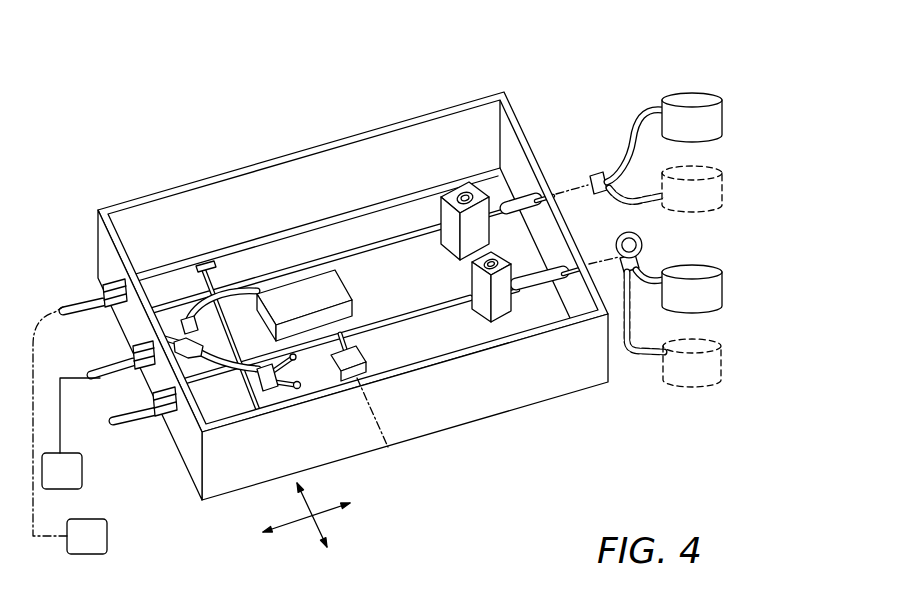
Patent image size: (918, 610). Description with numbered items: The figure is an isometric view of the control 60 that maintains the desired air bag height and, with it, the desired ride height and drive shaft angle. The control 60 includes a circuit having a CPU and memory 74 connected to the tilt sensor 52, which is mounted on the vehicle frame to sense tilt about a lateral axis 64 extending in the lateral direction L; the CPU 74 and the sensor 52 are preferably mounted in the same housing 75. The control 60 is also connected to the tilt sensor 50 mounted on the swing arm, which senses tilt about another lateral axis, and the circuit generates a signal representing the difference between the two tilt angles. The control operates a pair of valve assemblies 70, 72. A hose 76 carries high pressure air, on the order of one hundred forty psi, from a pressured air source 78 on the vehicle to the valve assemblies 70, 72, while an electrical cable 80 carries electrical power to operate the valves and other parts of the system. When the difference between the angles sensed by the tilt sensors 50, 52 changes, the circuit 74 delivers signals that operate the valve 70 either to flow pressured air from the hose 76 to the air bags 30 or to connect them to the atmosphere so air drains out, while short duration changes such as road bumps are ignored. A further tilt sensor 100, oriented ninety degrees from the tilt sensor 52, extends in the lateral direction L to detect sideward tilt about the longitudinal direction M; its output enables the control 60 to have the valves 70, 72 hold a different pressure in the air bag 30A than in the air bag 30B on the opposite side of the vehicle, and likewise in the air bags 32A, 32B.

The air bag 30 is at (698, 217).
The air bag 30A is at (722, 116).
The air bag 32A is at (722, 190).
The air bag 30B is at (722, 290).
The air bag 32B is at (722, 364).
The tilt sensor 50 is at (107, 535).
The tilt sensor 52 is at (363, 360).
The control 60 is at (351, 274).
The lateral axis 64 is at (391, 452).
The valve assembly 70 is at (453, 190).
The valve assembly 72 is at (487, 258).
The CPU and memory 74 is at (290, 290).
The housing 75 is at (151, 194).
The hose 76 is at (113, 378).
The pressured air source 78 is at (82, 470).
The electrical cable 80 is at (127, 421).
The tilt sensor 100 is at (343, 370).
The lateral direction L is at (306, 533).
The longitudinal direction M is at (328, 514).